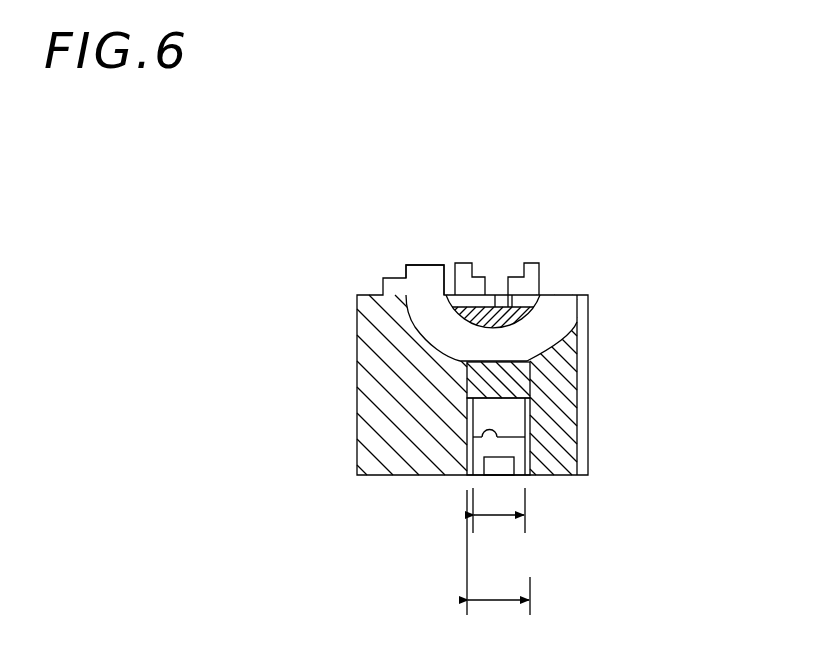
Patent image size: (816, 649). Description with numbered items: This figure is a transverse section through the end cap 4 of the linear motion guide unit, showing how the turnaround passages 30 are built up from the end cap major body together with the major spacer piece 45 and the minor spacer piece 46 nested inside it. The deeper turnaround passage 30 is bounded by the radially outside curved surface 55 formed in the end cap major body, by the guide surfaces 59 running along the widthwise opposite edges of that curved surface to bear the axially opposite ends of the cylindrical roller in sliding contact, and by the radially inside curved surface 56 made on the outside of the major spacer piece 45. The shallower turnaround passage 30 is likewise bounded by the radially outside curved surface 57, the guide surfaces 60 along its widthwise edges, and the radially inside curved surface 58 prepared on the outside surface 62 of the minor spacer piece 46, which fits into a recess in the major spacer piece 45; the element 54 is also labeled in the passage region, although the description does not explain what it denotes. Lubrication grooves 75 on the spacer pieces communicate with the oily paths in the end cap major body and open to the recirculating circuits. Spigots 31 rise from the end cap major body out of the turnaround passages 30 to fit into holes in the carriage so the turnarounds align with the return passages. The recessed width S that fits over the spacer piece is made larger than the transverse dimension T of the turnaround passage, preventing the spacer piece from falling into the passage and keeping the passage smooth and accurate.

The end cap 4 is at (547, 457).
The turnaround passage 30 is at (530, 338).
The spigot 31 is at (465, 272).
The major spacer piece 45 is at (500, 385).
The minor spacer piece 46 is at (533, 317).
The bottom projection 54 is at (486, 458).
The radially outside curved surface 55 is at (487, 438).
The radially inside curved surface 56 is at (497, 402).
The radially outside curved surface 57 is at (493, 352).
The radially inside curved surface 58 is at (466, 327).
The guide surface 59 is at (520, 417).
The guide surface 60 is at (423, 290).
The outside surface 62 is at (490, 330).
The lubrication groove 75 is at (532, 298).
The transverse dimension T is at (490, 517).
The recessed width S is at (498, 563).